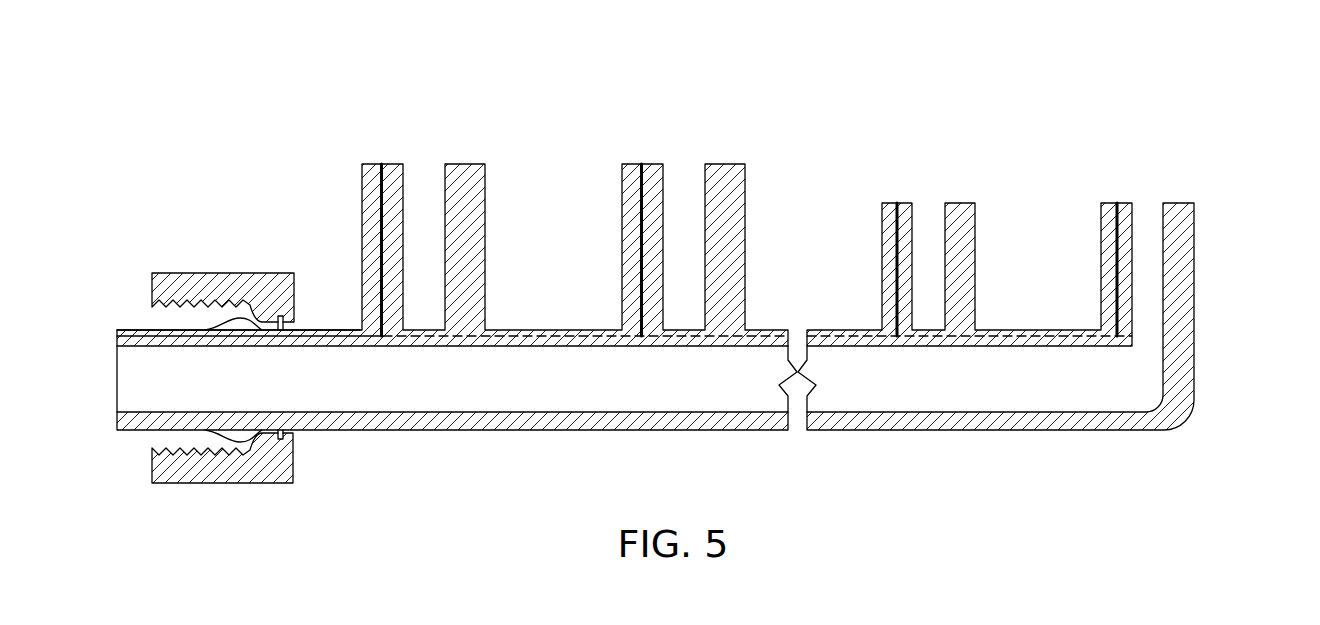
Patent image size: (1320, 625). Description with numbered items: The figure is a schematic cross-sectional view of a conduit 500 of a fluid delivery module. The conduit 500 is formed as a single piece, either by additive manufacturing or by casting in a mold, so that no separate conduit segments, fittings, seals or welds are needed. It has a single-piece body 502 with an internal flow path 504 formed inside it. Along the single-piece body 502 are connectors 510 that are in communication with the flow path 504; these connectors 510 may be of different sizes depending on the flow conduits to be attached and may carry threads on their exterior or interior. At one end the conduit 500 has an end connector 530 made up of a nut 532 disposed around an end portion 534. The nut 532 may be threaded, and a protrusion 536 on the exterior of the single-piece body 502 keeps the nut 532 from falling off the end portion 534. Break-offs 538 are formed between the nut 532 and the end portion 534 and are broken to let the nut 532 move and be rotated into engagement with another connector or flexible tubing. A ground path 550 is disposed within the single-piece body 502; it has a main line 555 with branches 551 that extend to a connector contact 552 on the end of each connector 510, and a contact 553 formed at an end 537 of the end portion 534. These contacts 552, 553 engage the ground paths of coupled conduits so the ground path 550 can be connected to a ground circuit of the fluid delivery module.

The conduit 500 is at (1220, 104).
The single-piece body 502 is at (1180, 393).
The internal flow path 504 is at (694, 391).
The connectors 510 is at (362, 198).
The end connector 530 is at (88, 236).
The nut 532 is at (218, 282).
The end portion 534 is at (130, 432).
The protrusion 536 is at (246, 450).
The end 537 is at (117, 340).
The break-offs 538 is at (290, 324).
The ground path 550 is at (572, 352).
The branches 551 is at (390, 184).
The connector contact 552 is at (381, 165).
The contact 553 is at (117, 333).
The main line 555 is at (612, 348).